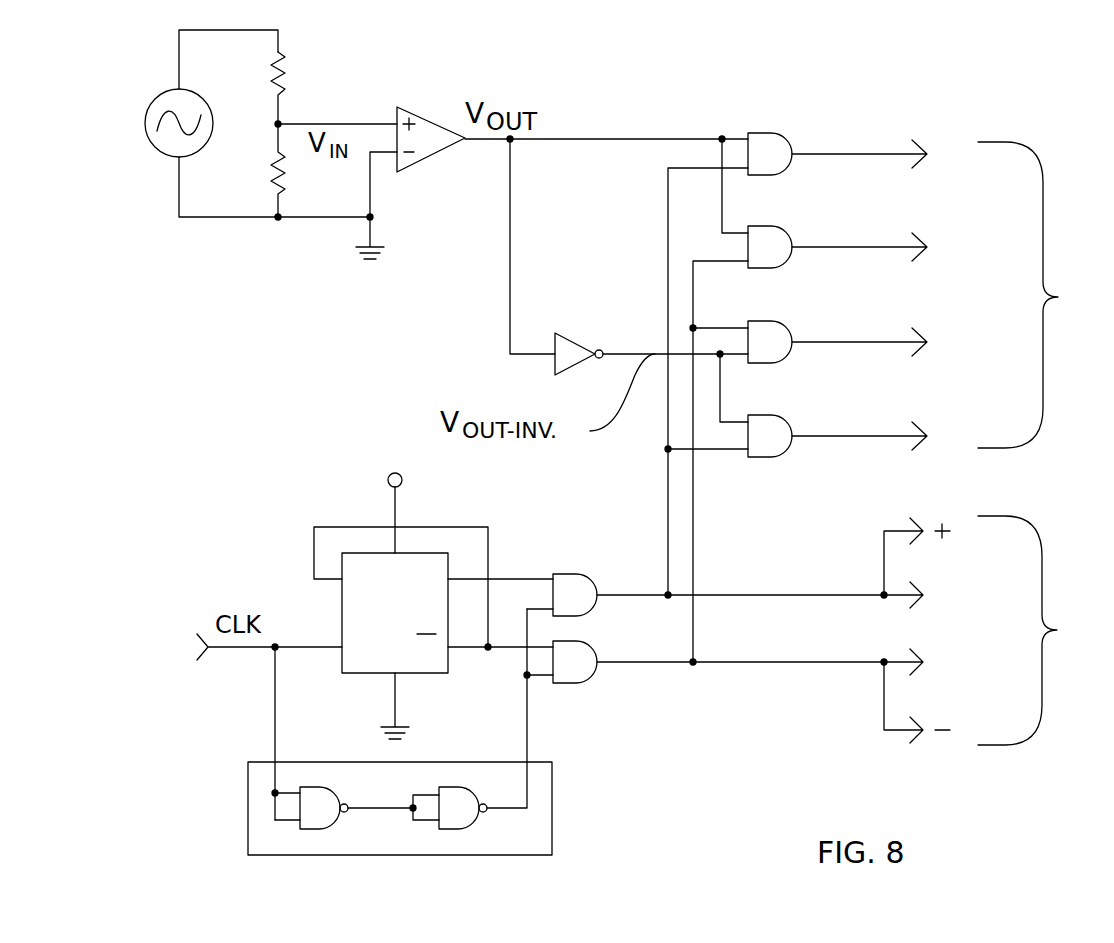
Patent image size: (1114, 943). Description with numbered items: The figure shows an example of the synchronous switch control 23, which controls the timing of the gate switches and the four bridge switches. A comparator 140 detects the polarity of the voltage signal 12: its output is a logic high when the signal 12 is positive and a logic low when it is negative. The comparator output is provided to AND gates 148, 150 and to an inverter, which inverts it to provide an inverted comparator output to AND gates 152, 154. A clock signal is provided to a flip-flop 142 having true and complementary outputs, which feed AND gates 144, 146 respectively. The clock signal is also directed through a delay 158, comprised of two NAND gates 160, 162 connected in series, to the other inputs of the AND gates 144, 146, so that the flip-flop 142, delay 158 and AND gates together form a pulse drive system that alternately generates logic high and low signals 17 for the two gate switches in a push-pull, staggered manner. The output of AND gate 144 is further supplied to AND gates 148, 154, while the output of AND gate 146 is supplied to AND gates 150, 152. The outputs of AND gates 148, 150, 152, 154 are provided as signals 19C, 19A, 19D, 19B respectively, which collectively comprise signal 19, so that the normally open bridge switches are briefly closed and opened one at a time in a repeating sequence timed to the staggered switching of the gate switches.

The voltage signal 12 is at (156, 100).
The comparator 140 is at (412, 114).
The AND gate 150 is at (570, 340).
The AND gate 148 is at (785, 133).
The AND gate 152 is at (785, 322).
The AND gate 154 is at (785, 415).
The signal 19 is at (943, 273).
The signal 19A is at (880, 247).
The signal 19B is at (880, 436).
The signal 19C is at (880, 154).
The signal 19D is at (880, 342).
The flip-flop 142 is at (342, 613).
The AND gate 144 is at (569, 574).
The AND gate 146 is at (570, 683).
The signals 17 is at (845, 630).
The delay 158 is at (443, 832).
The NAND gate 160 is at (325, 829).
The NAND gate 162 is at (460, 829).
The synchronous switch control 23 is at (265, 381).